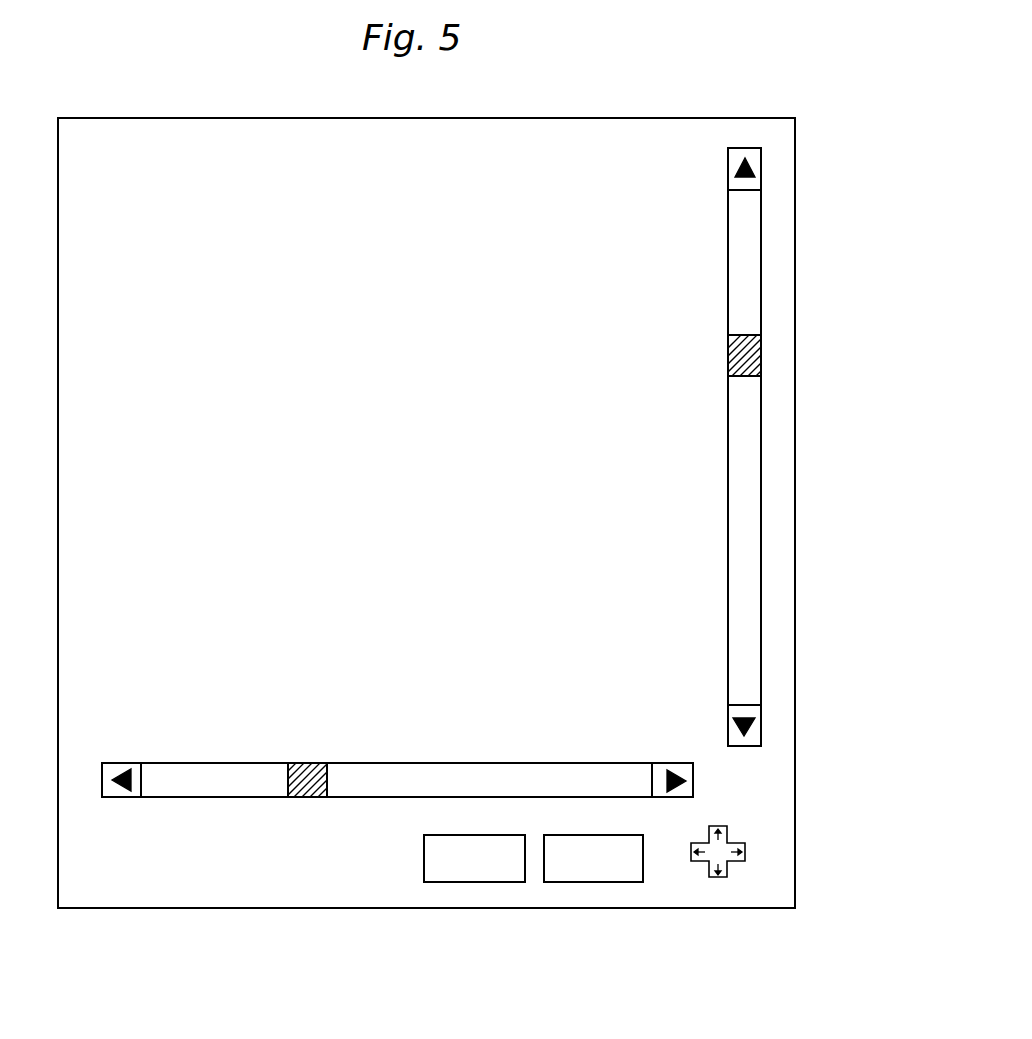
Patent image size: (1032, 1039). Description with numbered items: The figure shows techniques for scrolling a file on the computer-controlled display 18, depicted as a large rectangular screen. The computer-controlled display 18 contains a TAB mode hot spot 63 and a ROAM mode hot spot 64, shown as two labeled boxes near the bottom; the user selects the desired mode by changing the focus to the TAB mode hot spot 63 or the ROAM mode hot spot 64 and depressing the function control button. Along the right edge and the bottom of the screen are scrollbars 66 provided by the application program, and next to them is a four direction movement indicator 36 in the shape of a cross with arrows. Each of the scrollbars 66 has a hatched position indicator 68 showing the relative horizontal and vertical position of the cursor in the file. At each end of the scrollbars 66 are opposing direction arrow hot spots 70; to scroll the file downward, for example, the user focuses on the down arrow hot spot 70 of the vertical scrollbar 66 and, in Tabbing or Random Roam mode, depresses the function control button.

The computer-controlled display 18 is at (777, 118).
The four direction movement indicator 36 is at (745, 853).
The TAB mode hot spot 63 is at (486, 882).
The ROAM mode hot spot 64 is at (588, 882).
The scrollbar 66 is at (761, 458).
The position indicator 68 is at (761, 350).
The direction arrow hot spot 70 is at (761, 172).